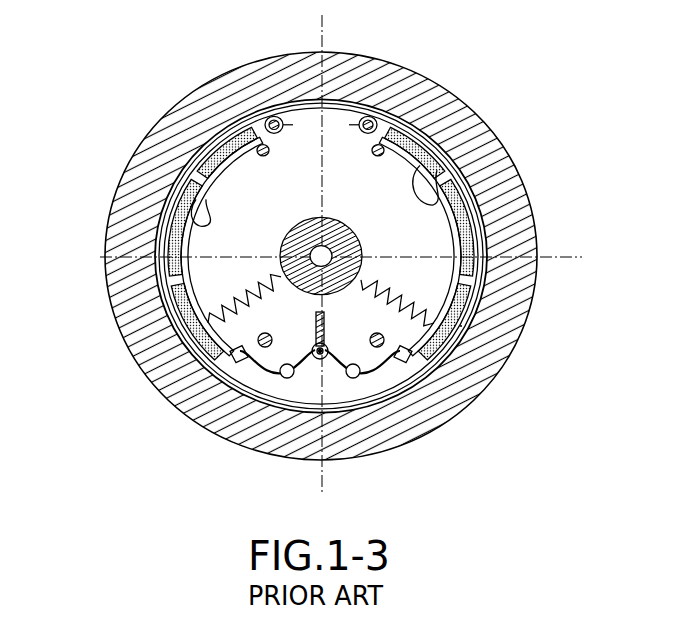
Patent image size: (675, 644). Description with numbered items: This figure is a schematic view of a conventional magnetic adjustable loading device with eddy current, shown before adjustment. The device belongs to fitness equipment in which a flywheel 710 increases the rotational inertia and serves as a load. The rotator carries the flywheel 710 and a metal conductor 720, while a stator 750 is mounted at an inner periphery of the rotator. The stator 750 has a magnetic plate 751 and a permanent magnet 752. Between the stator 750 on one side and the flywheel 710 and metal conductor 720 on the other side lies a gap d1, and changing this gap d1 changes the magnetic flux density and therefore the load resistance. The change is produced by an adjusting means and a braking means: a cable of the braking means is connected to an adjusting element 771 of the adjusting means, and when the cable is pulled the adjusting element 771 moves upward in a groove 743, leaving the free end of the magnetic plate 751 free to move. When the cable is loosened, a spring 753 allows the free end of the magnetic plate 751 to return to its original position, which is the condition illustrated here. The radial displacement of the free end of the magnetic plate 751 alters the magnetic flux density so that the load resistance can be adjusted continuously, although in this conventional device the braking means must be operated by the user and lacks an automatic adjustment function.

The flywheel 710 is at (162, 162).
The metal conductor 720 is at (296, 112).
The groove 743 is at (326, 312).
The stator 750 is at (234, 190).
The magnetic plate 751 is at (180, 207).
The permanent magnet 752 is at (212, 120).
The spring 753 is at (168, 271).
The adjusting element 771 is at (324, 360).
The gap d1 is at (478, 327).